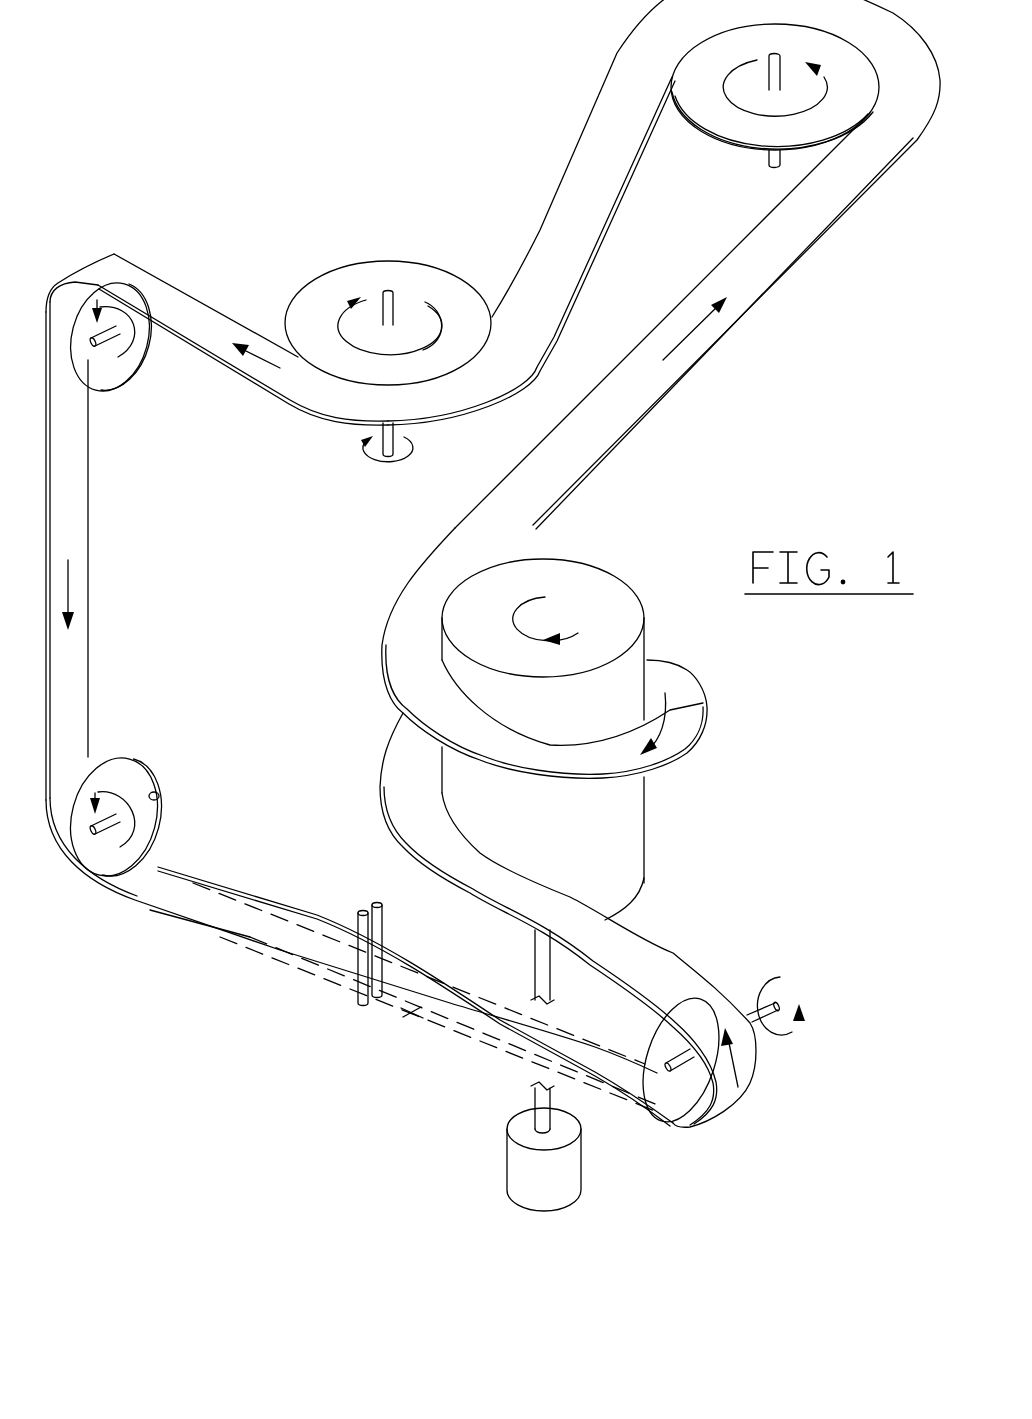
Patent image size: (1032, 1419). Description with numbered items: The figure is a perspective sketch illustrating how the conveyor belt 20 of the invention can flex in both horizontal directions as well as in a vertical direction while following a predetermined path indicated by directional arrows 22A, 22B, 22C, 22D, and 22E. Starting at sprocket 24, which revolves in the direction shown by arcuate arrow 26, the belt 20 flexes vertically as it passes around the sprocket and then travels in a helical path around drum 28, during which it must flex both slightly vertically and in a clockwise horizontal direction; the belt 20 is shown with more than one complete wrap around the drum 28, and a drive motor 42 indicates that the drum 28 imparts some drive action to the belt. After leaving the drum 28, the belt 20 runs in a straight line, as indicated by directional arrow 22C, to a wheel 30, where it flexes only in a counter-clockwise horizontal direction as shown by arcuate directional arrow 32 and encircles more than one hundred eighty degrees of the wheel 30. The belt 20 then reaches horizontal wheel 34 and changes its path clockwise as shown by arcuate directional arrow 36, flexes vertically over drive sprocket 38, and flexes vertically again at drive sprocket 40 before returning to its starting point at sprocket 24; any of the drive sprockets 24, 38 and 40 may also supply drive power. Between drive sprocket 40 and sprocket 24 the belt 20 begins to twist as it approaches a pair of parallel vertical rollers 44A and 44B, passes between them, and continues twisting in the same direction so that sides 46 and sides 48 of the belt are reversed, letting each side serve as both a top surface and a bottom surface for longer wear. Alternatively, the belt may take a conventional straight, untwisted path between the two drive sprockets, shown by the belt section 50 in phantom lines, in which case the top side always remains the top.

The belt 20 is at (172, 305).
The directional arrow 22A is at (743, 1065).
The directional arrow 22B is at (668, 722).
The directional arrow 22C is at (686, 340).
The directional arrow 22D is at (260, 363).
The directional arrow 22E is at (106, 563).
The sprocket 24 is at (690, 1090).
The arcuate arrow 26 is at (793, 1048).
The drum 28 is at (620, 838).
The wheel 30 is at (717, 113).
The arcuate directional arrow 32 is at (815, 113).
The horizontal wheel 34 is at (357, 271).
The arcuate directional arrow 36 is at (423, 350).
The drive sprocket 38 is at (138, 372).
The drive sprocket 40 is at (110, 778).
The drive motor 42 is at (553, 1187).
The vertical roller 44A is at (352, 932).
The vertical roller 44B is at (387, 922).
The sides of the belt 46 is at (250, 925).
The sides of the belt 48 is at (185, 920).
The belt section 50 is at (420, 1005).